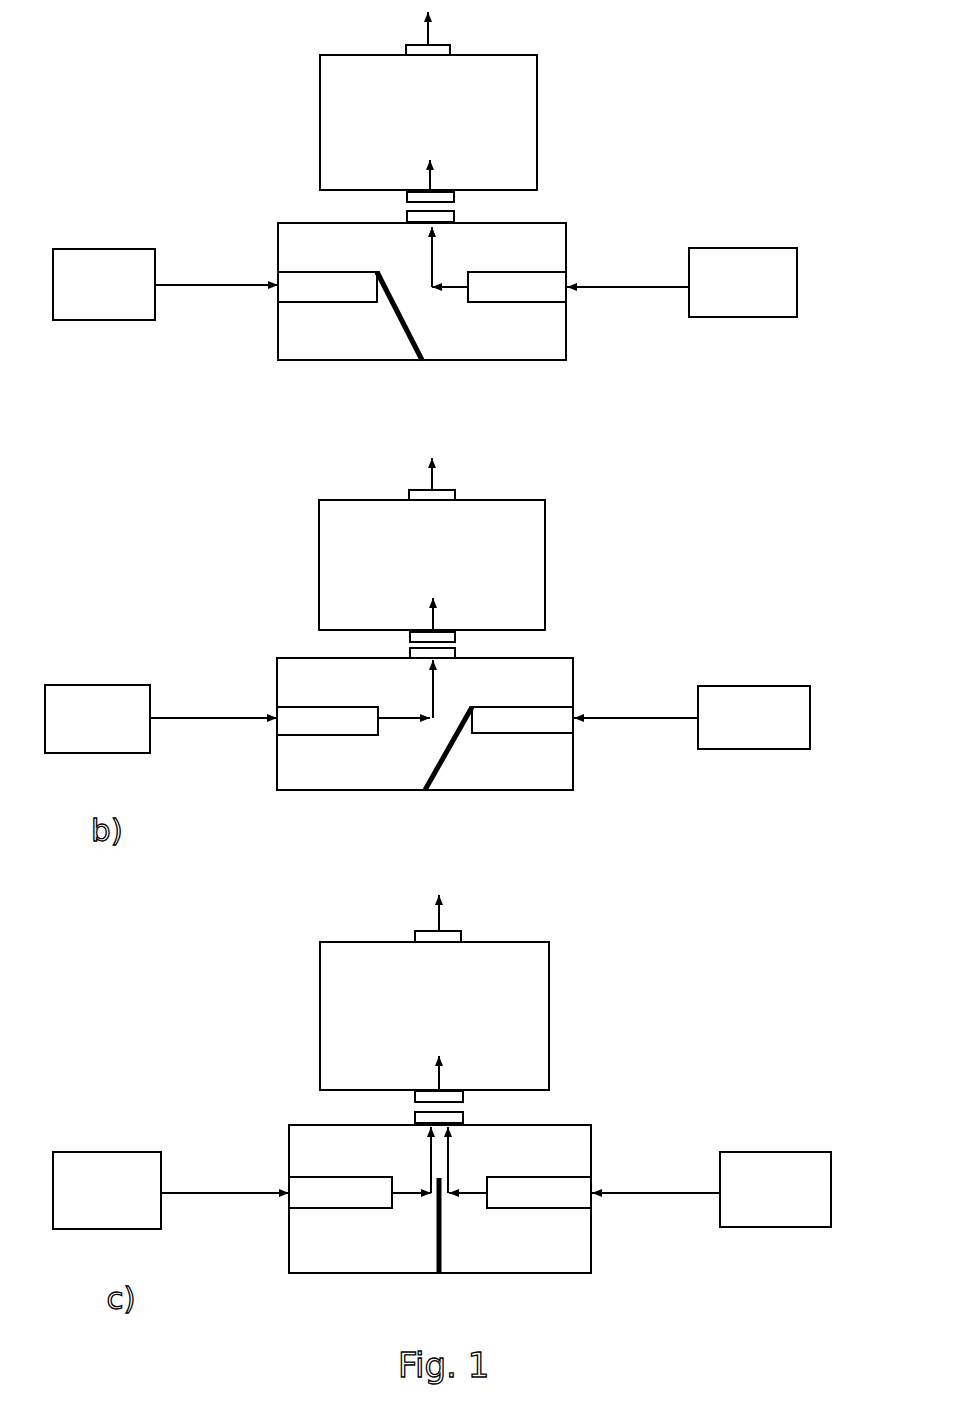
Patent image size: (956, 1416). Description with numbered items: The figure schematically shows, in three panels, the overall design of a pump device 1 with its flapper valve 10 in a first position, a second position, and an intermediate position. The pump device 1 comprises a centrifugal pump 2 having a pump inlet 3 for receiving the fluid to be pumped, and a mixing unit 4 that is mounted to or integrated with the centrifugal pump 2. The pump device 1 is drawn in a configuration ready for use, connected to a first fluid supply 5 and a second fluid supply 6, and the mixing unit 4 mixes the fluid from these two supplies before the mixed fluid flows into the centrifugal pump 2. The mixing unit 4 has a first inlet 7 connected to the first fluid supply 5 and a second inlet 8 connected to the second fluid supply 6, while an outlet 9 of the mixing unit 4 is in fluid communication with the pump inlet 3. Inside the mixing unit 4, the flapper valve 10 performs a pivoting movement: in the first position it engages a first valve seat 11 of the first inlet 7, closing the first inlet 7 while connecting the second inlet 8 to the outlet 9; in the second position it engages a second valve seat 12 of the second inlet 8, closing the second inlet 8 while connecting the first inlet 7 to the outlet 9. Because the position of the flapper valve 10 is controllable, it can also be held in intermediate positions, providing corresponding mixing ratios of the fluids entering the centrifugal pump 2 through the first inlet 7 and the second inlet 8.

The pump device 1 is at (617, 113).
The centrifugal pump 2 is at (353, 121).
The pump inlet 3 is at (442, 191).
The mixing unit 4 is at (305, 335).
The first fluid supply 5 is at (80, 263).
The second fluid supply 6 is at (738, 267).
The first inlet 7 is at (303, 287).
The second inlet 8 is at (528, 285).
The outlet 9 is at (453, 212).
The flapper valve 10 is at (407, 327).
The first valve seat 11 is at (377, 272).
The second valve seat 12 is at (468, 270).